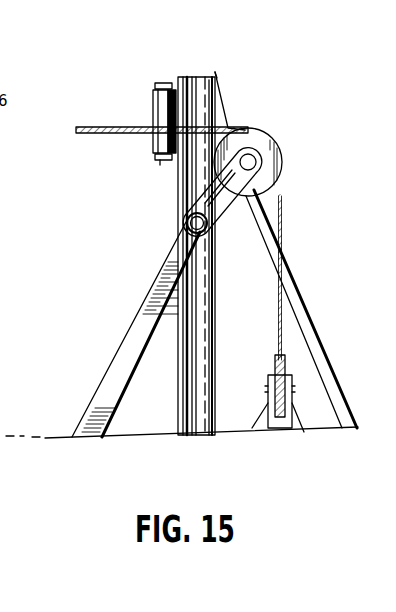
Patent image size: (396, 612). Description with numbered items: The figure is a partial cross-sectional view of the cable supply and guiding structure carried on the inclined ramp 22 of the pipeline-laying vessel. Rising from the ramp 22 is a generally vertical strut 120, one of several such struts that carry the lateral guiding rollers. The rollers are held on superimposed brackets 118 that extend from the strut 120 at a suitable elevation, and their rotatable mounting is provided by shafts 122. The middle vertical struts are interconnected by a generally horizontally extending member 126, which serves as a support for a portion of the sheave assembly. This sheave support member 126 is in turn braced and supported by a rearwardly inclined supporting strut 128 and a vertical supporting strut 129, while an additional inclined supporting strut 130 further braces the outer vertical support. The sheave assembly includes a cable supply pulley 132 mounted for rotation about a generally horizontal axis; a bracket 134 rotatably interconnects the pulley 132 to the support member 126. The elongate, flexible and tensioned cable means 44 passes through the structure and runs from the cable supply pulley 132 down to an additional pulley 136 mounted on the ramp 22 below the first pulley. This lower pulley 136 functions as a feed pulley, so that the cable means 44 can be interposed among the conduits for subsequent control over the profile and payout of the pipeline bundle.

The ramp 22 is at (68, 412).
The cable means 44 is at (91, 106).
The superimposed brackets 118 is at (173, 86).
The vertical struts 120 is at (203, 90).
The shafts 122 is at (165, 83).
The horizontally extending member 126 is at (187, 224).
The rearwardly inclined supporting strut 128 is at (146, 318).
The vertical supporting strut 129 is at (195, 322).
The inclined supporting struts 130 is at (335, 338).
The cable supply pulley 132 is at (250, 142).
The bracket 134 is at (232, 200).
The additional pulley 136 is at (274, 368).